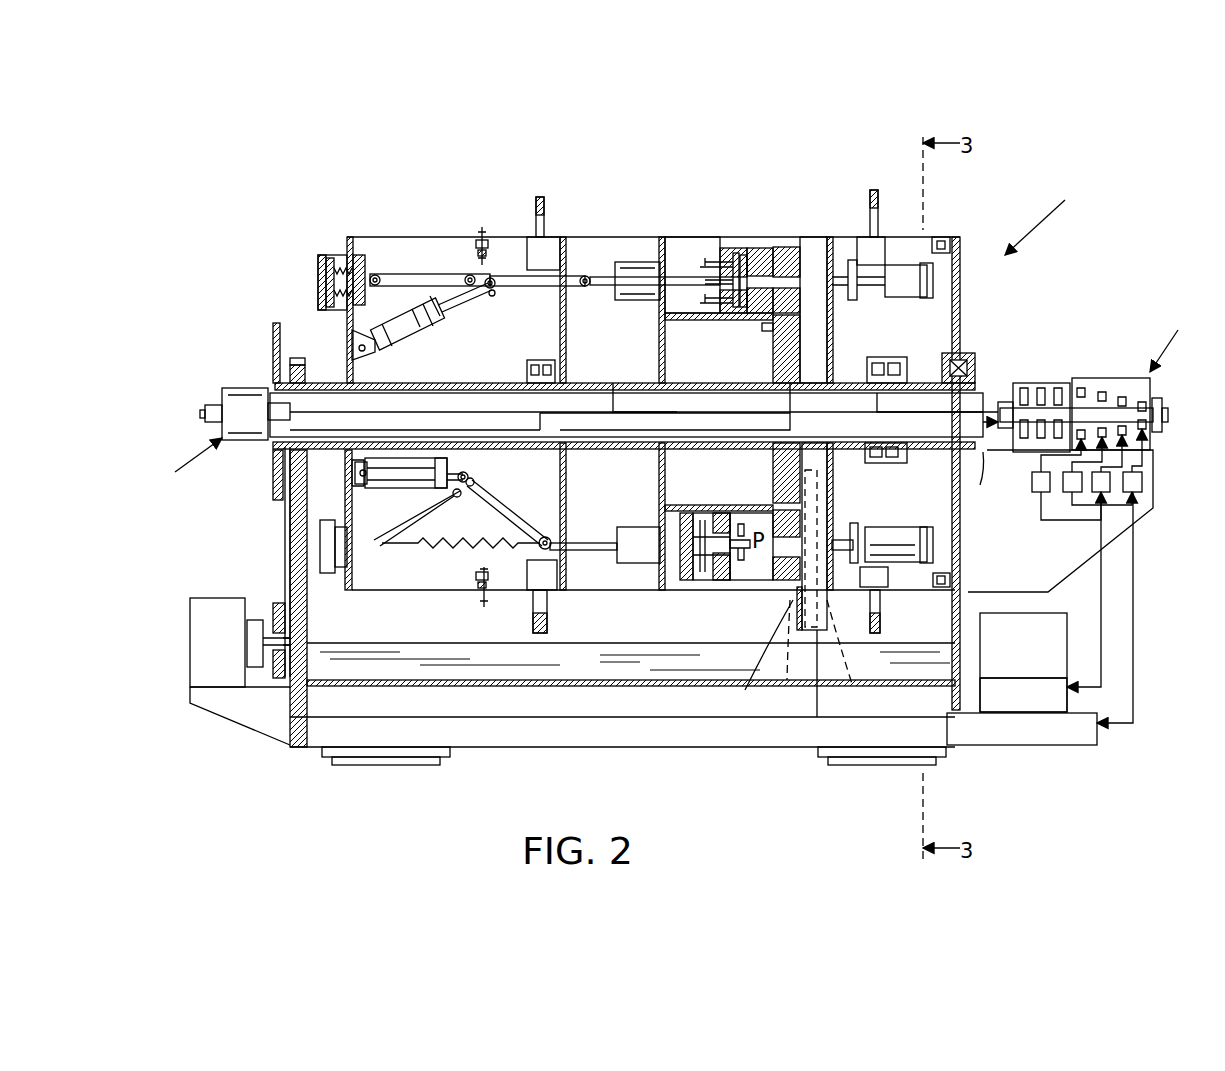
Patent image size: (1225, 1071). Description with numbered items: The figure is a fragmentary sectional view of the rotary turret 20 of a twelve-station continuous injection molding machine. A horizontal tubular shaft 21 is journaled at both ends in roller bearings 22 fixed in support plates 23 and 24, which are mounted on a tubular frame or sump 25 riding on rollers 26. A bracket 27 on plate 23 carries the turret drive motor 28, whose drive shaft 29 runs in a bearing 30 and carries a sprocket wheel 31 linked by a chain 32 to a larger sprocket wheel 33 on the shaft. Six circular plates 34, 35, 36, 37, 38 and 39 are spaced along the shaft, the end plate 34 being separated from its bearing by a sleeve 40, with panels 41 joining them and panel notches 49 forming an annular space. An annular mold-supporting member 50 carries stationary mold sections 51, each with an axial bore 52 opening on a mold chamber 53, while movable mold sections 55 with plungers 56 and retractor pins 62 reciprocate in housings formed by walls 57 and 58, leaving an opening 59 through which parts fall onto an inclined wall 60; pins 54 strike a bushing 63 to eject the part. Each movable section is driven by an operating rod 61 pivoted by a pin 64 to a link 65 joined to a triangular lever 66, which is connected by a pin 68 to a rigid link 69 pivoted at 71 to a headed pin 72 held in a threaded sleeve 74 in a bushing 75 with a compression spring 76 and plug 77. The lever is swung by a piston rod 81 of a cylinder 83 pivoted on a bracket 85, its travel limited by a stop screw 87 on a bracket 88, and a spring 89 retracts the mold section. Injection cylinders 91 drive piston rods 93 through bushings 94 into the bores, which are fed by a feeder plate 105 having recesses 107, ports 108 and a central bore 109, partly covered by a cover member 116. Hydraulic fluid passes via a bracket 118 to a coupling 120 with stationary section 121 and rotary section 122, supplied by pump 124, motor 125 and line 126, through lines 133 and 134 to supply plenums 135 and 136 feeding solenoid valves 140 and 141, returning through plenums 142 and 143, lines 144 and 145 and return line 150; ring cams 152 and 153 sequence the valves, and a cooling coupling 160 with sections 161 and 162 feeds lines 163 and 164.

The rotary turret 20 is at (1050, 216).
The tubular shaft 21 is at (572, 383).
The roller bearings 22 is at (275, 358).
The support plate 23 is at (292, 532).
The support plate 24 is at (950, 712).
The tubular frame or sump 25 is at (603, 740).
The rollers 26 is at (393, 765).
The bracket 27 is at (242, 720).
The turret drive motor 28 is at (240, 642).
The drive shaft 29 is at (270, 600).
The bearing 30 is at (308, 640).
The sprocket wheel 31 is at (292, 618).
The chain 32 is at (284, 526).
The sprocket wheel 33 is at (273, 480).
The circular plate 34 is at (348, 252).
The circular plate 35 is at (563, 240).
The circular plate 36 is at (668, 242).
The circular plate 37 is at (812, 240).
The circular plate 38 is at (832, 242).
The circular plate 39 is at (960, 248).
The sleeve 40 is at (312, 378).
The panels 41 is at (405, 237).
The panel notches 49 is at (785, 340).
The mold-supporting member 50 is at (780, 360).
The stationary mold section 51 is at (776, 250).
The axial bore 52 is at (795, 247).
The annular mold chamber 53 is at (762, 323).
The pins 54 is at (725, 290).
The movable mold section 55 is at (740, 252).
The plunger 56 is at (712, 513).
The outer housing wall 57 is at (663, 240).
The housing wall 58 is at (668, 322).
The opening 59 is at (745, 580).
The inclined wall 60 is at (592, 668).
The operating rod 61 is at (685, 277).
The retractor pin 62 is at (735, 248).
The bushing 63 is at (620, 264).
The pin 64 is at (585, 286).
The link 65 is at (515, 287).
The triangular lever or link 66 is at (492, 296).
The pin 68 is at (468, 274).
The rigid link 69 is at (403, 274).
The pivot point 71 is at (377, 274).
The headed pin 72 is at (367, 288).
The externally-threaded sleeve 74 is at (325, 255).
The bushing 75 is at (358, 253).
The compression spring 76 is at (320, 275).
The plug 77 is at (320, 290).
The piston rod 81 is at (468, 306).
The cylinder 83 is at (415, 338).
The bracket 85 is at (370, 355).
The adjustable stop member or screw 87 is at (482, 225).
The bracket 88 is at (476, 244).
The spring 89 is at (430, 553).
The injection cylinder 91 is at (902, 265).
The piston rod 93 is at (815, 270).
The bushing 94 is at (857, 292).
The feeder plate 105 is at (824, 685).
The radial recesses 107 is at (784, 656).
The radial ports 108 is at (861, 656).
The central bore 109 is at (828, 525).
The stationary cover member 116 is at (749, 656).
The bracket 118 is at (1153, 492).
The hydraulic coupling mechanism 120 is at (1180, 340).
The stationary coupling section 121 is at (1110, 378).
The rotary joint section 122 is at (1040, 383).
The high pressure hydraulic pump 124 is at (1023, 695).
The motor 125 is at (1023, 662).
The line 126 is at (1105, 615).
The supply line 133 is at (860, 430).
The supply line 134 is at (995, 402).
The supply plenum 135 is at (540, 416).
The supply plenum 136 is at (900, 360).
The solenoid valves 140 is at (530, 255).
The solenoid valves 141 is at (878, 237).
The return plenum 142 is at (562, 478).
The return plenum 143 is at (878, 363).
The return line 144 is at (1001, 475).
The return line 145 is at (877, 405).
The return line 150 is at (1135, 665).
The ring cam 152 is at (540, 196).
The ring cam 153 is at (872, 190).
The coupling mechanism 160 is at (191, 462).
The stationary coupling section 161 is at (238, 386).
The rotary coupling section 162 is at (272, 422).
The supply line 163 is at (685, 383).
The return line 164 is at (610, 383).